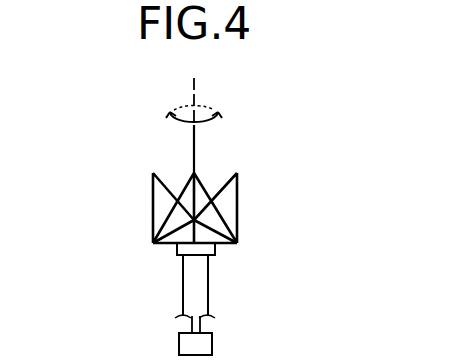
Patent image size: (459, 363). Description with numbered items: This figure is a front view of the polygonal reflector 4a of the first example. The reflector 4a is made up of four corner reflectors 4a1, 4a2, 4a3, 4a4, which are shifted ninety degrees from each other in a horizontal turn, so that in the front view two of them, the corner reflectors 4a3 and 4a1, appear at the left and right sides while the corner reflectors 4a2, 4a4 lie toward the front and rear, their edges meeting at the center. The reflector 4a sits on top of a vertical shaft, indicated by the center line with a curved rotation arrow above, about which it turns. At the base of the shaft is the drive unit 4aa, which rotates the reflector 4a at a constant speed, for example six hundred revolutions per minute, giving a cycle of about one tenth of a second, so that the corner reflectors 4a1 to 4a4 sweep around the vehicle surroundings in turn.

The reflector 4a is at (227, 157).
The corner reflector 4a1 is at (233, 192).
The corner reflector 4a2 is at (212, 219).
The corner reflector 4a3 is at (155, 199).
The corner reflector 4a4 is at (195, 231).
The drive unit 4aa is at (212, 343).